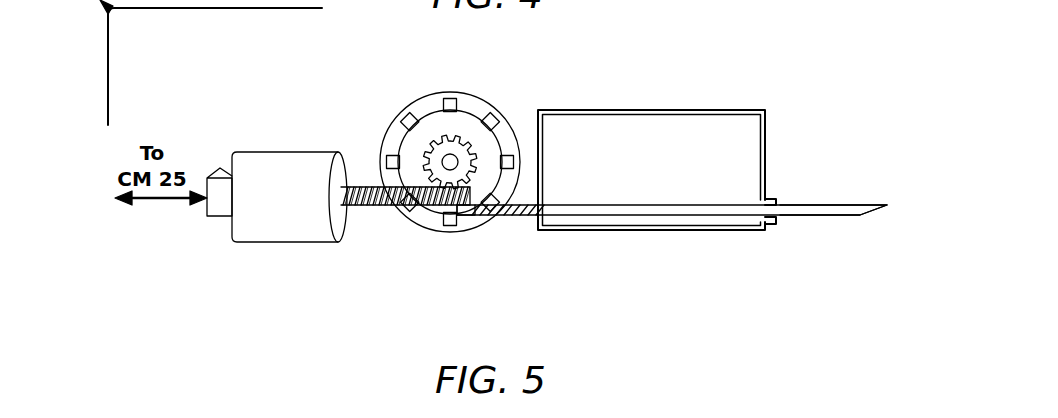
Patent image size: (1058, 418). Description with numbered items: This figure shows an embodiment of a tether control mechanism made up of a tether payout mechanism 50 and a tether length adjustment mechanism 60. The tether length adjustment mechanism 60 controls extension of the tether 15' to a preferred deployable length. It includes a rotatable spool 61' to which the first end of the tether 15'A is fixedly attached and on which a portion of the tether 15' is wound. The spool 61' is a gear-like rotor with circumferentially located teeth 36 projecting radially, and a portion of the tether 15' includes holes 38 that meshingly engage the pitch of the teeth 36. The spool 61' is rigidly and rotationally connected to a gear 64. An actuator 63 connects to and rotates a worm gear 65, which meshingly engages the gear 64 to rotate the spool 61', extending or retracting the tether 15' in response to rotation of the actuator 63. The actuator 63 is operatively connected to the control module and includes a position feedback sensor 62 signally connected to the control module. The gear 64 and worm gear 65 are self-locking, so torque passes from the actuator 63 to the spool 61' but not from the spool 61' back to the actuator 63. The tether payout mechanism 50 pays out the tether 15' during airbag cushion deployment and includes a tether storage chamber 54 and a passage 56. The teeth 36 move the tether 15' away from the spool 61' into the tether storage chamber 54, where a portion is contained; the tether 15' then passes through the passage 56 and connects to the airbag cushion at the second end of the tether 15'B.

The teeth 36 is at (451, 97).
The holes 38 is at (563, 205).
The tether payout mechanism 50 is at (676, 230).
The tether storage chamber 54 is at (654, 228).
The passage 56 is at (770, 228).
The tether length adjustment mechanism 60 is at (248, 201).
The rotatable spool 61' is at (468, 132).
The position feedback sensor 62 is at (221, 169).
The actuator 63 is at (287, 157).
The gear 64 is at (450, 162).
The worm gear 65 is at (383, 206).
The tether 15' is at (634, 235).
The first end of the tether 15'A is at (428, 272).
The second end of the tether 15'B is at (833, 173).